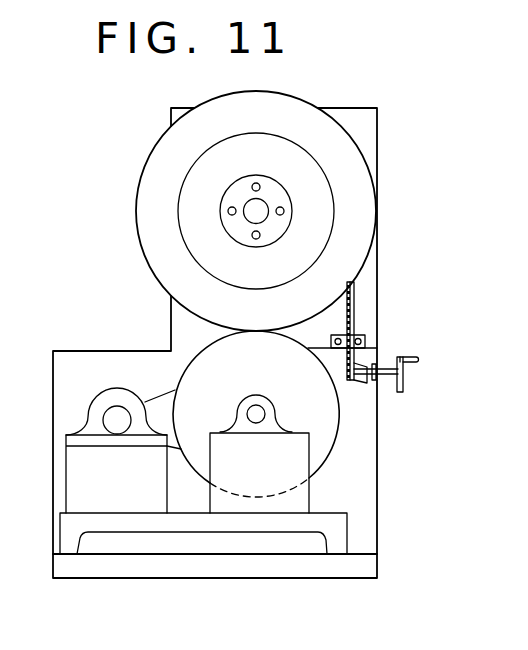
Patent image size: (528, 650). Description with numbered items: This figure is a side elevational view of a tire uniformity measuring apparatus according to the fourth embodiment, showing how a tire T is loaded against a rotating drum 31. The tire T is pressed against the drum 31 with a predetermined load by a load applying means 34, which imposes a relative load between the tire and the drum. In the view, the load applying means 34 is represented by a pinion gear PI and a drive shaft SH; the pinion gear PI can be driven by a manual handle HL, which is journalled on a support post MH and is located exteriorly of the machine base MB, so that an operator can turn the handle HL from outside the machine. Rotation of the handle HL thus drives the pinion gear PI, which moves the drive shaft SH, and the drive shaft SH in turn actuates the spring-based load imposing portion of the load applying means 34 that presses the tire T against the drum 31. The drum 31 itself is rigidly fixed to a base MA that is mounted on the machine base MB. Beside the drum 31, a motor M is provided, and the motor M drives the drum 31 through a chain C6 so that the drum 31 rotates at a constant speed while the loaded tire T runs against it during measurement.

The tire T is at (277, 92).
The drive shaft SH is at (354, 313).
The manual handle HL is at (403, 359).
The load applying means 34 is at (427, 374).
The pinion gear PI is at (377, 402).
The support post MH is at (370, 467).
The drum 31 is at (320, 438).
The chain C6 is at (167, 392).
The motor M is at (85, 415).
The machine base MB is at (212, 563).
The base MA is at (337, 537).